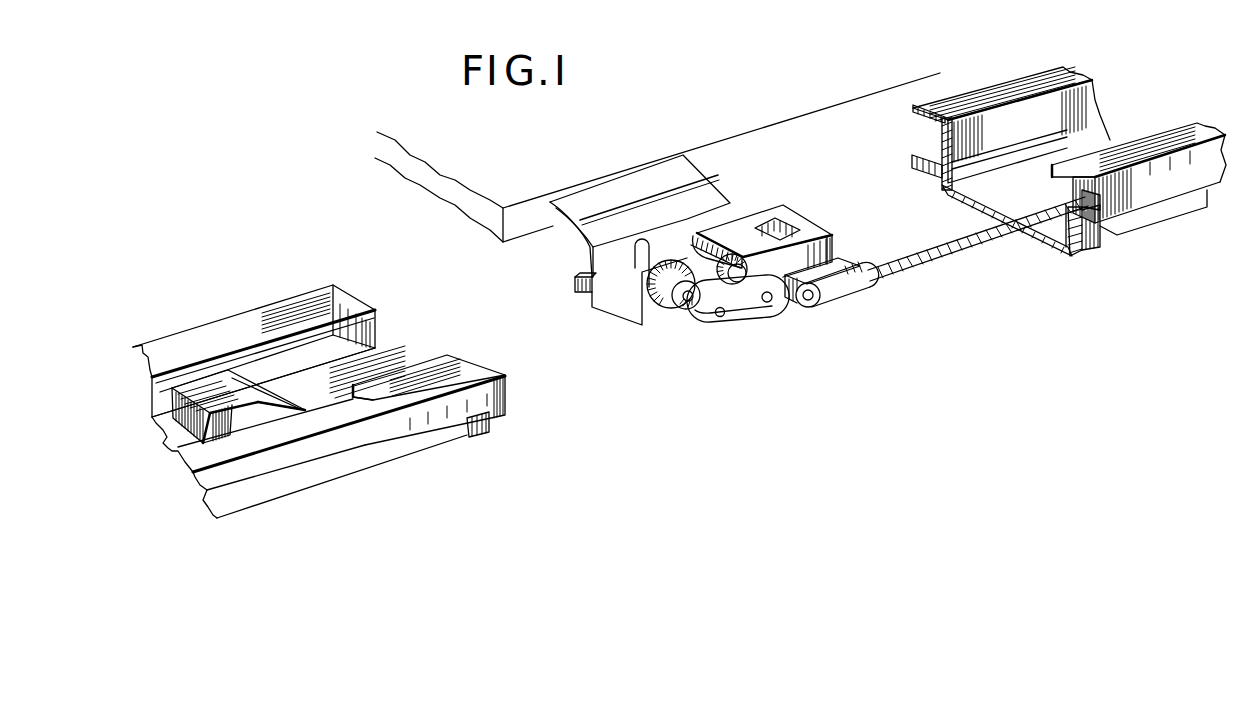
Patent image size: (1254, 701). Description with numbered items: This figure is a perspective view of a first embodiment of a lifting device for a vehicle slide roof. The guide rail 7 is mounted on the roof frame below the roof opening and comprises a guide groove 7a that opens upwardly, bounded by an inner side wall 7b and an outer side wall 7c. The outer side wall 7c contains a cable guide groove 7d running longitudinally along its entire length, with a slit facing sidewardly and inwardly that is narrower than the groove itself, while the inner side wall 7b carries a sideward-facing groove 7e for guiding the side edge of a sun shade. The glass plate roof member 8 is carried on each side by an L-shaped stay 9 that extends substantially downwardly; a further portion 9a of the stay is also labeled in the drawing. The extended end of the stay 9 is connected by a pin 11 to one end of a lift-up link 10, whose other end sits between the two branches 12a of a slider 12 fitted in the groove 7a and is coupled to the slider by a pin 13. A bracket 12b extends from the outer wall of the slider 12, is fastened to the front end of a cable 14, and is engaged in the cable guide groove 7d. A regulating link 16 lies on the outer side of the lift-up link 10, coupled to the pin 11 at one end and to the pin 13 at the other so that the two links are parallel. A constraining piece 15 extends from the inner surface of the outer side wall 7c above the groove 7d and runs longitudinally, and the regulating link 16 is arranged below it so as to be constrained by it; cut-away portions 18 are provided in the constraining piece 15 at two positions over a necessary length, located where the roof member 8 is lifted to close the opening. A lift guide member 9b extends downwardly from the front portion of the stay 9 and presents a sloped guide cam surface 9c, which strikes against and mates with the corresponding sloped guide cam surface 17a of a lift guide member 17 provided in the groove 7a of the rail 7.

The guide rail 7 is at (292, 292).
The guide groove 7a is at (375, 368).
The inner side wall 7b is at (950, 197).
The outer side wall 7c is at (1087, 252).
The cable guide groove 7d is at (1108, 223).
The groove 7e is at (940, 140).
The glass plate roof member 8 is at (763, 122).
The L-shaped stay 9 is at (655, 183).
The bracket slot 9a is at (650, 258).
The lift guide member 9b is at (605, 308).
The sloped guide cam surface 9c is at (585, 312).
The lift-up link 10 is at (673, 302).
The pin 11 is at (687, 303).
The slider 12 is at (788, 217).
The branches 12a is at (718, 232).
The bracket 12b is at (845, 286).
The pin 13 is at (770, 302).
The cable 14 is at (972, 247).
The constraining piece 15 is at (447, 363).
The regulating link 16 is at (738, 320).
The lift guide member 17 is at (230, 393).
The sloped guide cam surface 17a is at (277, 395).
The cut-away portion 18 is at (358, 392).